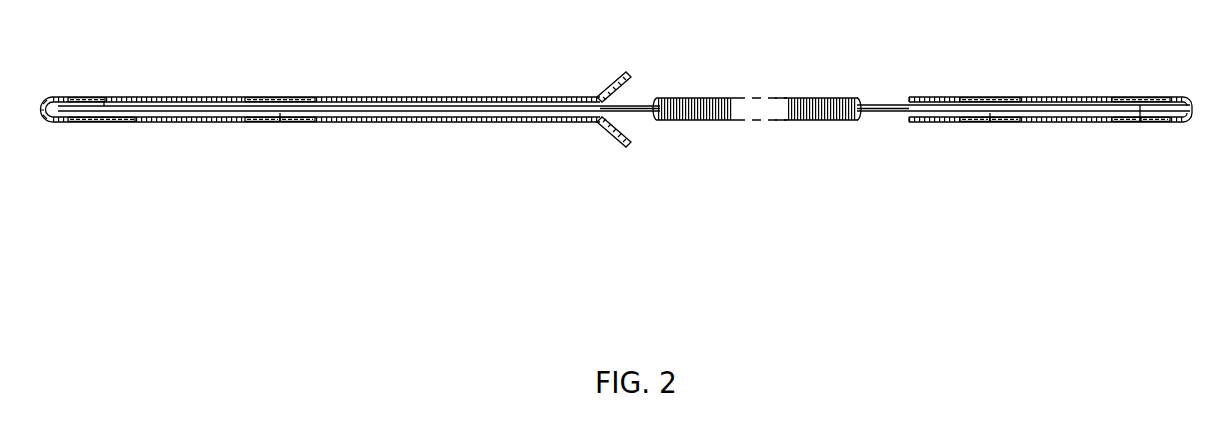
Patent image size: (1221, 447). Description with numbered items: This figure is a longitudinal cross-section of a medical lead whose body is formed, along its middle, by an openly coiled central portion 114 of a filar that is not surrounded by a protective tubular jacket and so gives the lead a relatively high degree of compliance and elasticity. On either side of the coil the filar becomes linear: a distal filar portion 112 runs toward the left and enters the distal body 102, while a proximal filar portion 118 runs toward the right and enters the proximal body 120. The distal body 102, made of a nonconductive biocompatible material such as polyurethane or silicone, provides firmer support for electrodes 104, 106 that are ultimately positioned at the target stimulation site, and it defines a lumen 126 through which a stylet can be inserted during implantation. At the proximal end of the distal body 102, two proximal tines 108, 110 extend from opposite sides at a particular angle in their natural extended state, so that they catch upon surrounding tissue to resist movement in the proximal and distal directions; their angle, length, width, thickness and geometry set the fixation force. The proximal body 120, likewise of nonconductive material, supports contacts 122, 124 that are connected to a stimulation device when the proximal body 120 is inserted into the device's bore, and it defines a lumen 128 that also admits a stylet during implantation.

The distal body 102 is at (422, 97).
The electrode 104 is at (112, 98).
The electrode 106 is at (283, 97).
The proximal tine 108 is at (618, 74).
The proximal tine 110 is at (617, 143).
The distal filar portion 112 is at (640, 104).
The central portion of filar 114 is at (710, 97).
The proximal filar portion 118 is at (880, 112).
The proximal body 120 is at (928, 97).
The contact 122 is at (985, 97).
The contact 124 is at (1127, 97).
The lumen 126 is at (70, 108).
The lumen 128 is at (1190, 110).